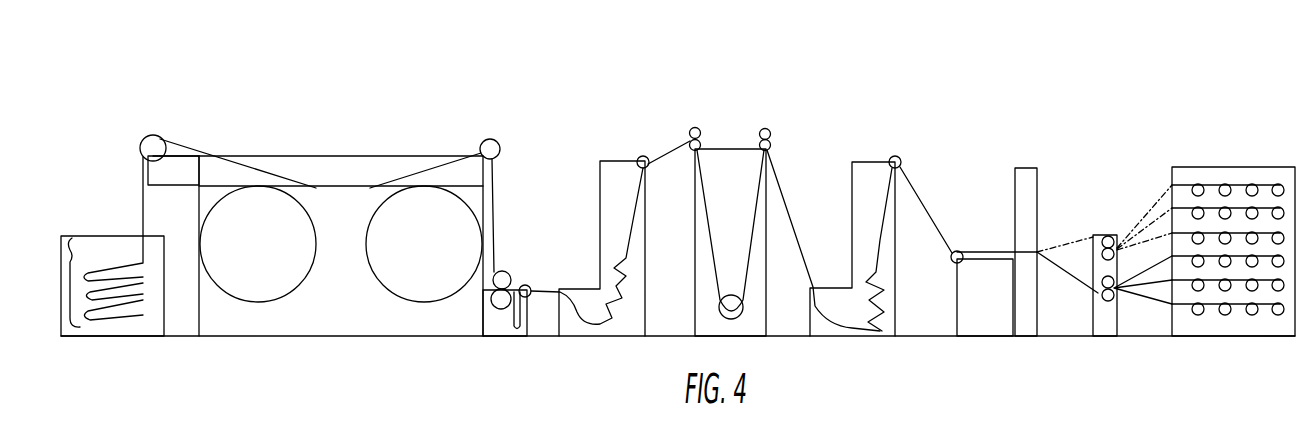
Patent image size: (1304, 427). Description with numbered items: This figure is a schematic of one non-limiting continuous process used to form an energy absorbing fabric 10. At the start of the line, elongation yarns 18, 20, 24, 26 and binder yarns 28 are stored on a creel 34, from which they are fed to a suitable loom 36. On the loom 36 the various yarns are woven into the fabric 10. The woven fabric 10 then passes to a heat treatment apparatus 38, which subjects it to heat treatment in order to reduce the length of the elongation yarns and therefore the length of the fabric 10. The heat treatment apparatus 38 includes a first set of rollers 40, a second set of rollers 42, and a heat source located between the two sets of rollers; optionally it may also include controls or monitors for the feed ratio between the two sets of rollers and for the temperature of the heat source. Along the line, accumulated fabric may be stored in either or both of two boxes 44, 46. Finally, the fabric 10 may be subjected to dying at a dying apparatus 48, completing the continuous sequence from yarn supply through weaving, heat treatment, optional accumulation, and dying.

The fabric 10 is at (143, 212).
The elongation yarn 18 is at (1104, 208).
The elongation yarn 20 is at (1104, 208).
The elongation yarn 24 is at (1104, 208).
The elongation yarn 26 is at (1064, 243).
The binder yarns 28 is at (1078, 280).
The creel 34 is at (1222, 166).
The loom 36 is at (986, 249).
The heat treatment apparatus 38 is at (718, 130).
The first set of rollers 40 is at (760, 129).
The second set of rollers 42 is at (690, 129).
The box 44 is at (898, 156).
The box 46 is at (598, 157).
The dying apparatus 48 is at (329, 137).